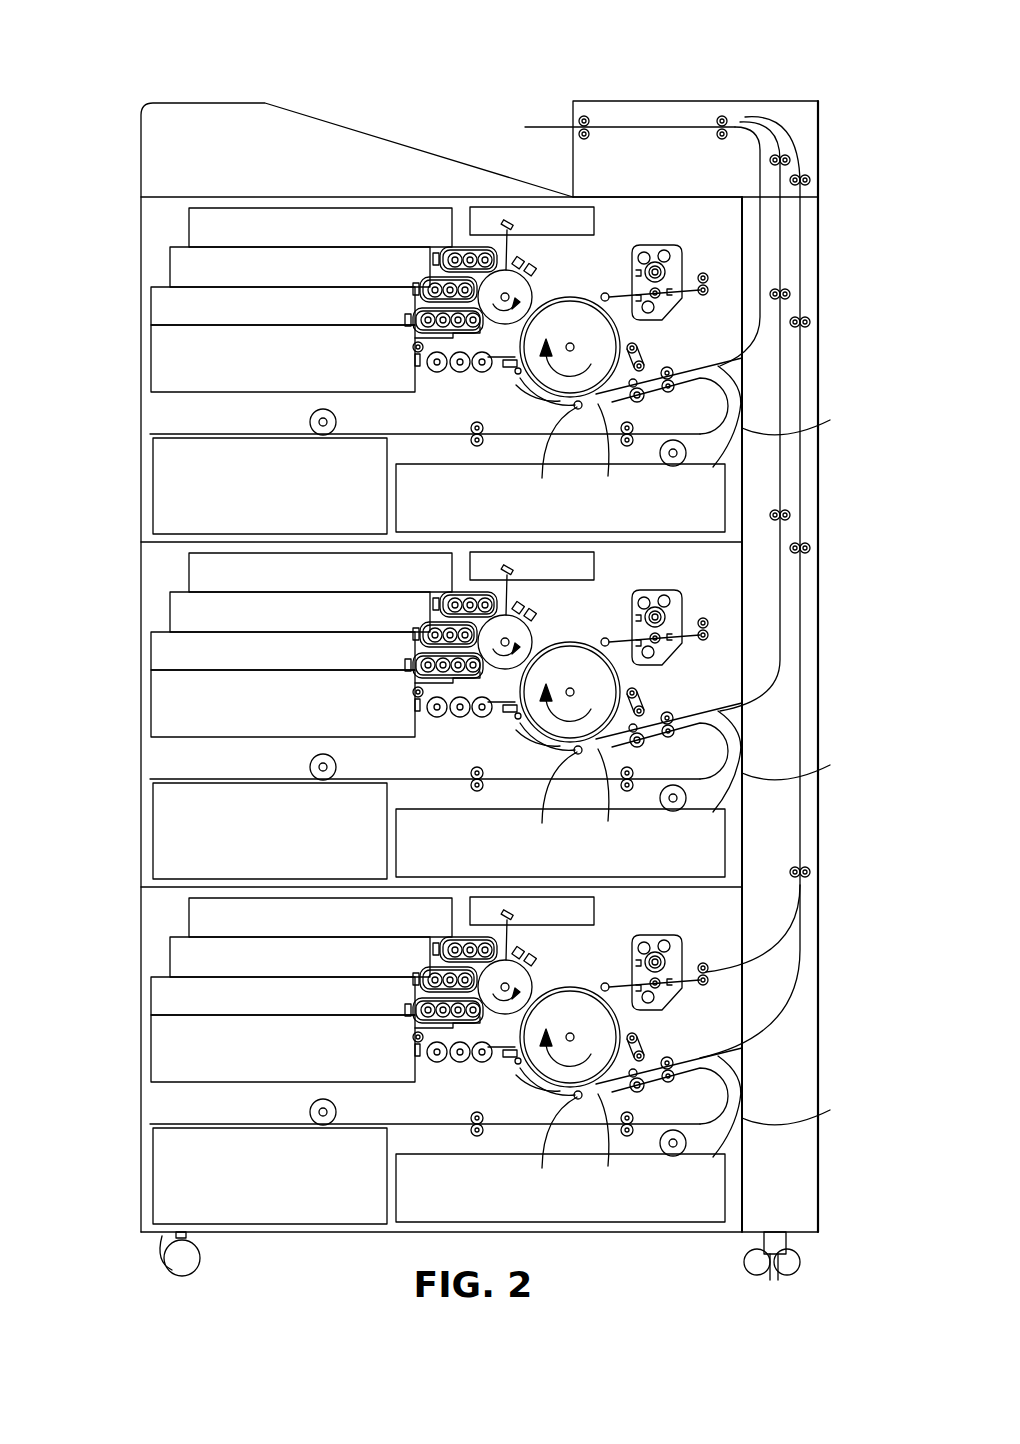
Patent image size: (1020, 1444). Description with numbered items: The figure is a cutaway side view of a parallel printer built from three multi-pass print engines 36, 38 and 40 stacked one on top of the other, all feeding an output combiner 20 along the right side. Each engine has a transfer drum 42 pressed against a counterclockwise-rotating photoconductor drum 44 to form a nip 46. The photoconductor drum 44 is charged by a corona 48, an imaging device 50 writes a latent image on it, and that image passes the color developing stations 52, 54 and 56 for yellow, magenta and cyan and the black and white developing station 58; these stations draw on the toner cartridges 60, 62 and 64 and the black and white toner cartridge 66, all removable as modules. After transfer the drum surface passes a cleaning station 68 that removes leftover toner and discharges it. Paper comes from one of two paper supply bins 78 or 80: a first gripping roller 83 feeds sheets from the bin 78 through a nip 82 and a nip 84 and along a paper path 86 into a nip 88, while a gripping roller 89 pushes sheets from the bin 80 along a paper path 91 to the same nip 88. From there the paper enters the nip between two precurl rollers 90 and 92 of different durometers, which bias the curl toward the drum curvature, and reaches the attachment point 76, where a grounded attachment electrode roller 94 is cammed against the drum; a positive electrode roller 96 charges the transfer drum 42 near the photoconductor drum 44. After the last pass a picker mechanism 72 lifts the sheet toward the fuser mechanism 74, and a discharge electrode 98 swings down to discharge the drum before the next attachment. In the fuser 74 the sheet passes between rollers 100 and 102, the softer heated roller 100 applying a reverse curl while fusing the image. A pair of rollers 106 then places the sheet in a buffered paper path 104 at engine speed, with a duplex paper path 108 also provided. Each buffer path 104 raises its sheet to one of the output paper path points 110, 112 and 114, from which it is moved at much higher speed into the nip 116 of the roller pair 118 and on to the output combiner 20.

The output combiner 20 is at (808, 605).
The print engine 36 is at (118, 285).
The print engine 38 is at (120, 625).
The print engine 40 is at (126, 942).
The transfer drum 42 is at (562, 310).
The photoconductor drum 44 is at (497, 238).
The nip 46 is at (533, 300).
The corona 48 is at (522, 250).
The imaging device 50 is at (473, 222).
The color developing station 52 is at (456, 249).
The color developing station 54 is at (420, 290).
The color developing station 56 is at (405, 320).
The black and white developing station 58 is at (437, 365).
The toner cartridge 60 is at (215, 217).
The toner cartridge 62 is at (182, 260).
The toner cartridge 64 is at (165, 305).
The black and white toner cartridge 66 is at (188, 362).
The cleaning station 68 is at (532, 262).
The picker mechanism 72 is at (645, 256).
The fuser mechanism 74 is at (606, 292).
The attachment point 76 is at (606, 453).
The paper supply bin 78 is at (160, 460).
The paper supply bin 80 is at (560, 498).
The nip 82 is at (477, 425).
The first gripping roller 83 is at (313, 418).
The nip 84 is at (632, 428).
The paper path 86 is at (742, 374).
The nip 88 is at (668, 372).
The gripping roller 89 is at (670, 460).
The precurl roller 90 is at (620, 372).
The paper path 91 is at (830, 420).
The precurl roller 92 is at (600, 407).
The attachment electrode roller 94 is at (552, 457).
The positive electrode roller 96 is at (518, 372).
The discharge electrode 98 is at (650, 352).
The roller 100 is at (672, 247).
The roller 102 is at (680, 285).
The paper path 104 is at (720, 280).
The pair of rollers 106 is at (705, 290).
The duplex paper path 108 is at (770, 338).
The output paper path point 110 is at (755, 120).
The output paper path point 112 is at (775, 128).
The output paper path point 114 is at (800, 165).
The nip 116 is at (735, 125).
The roller pair 118 is at (722, 115).